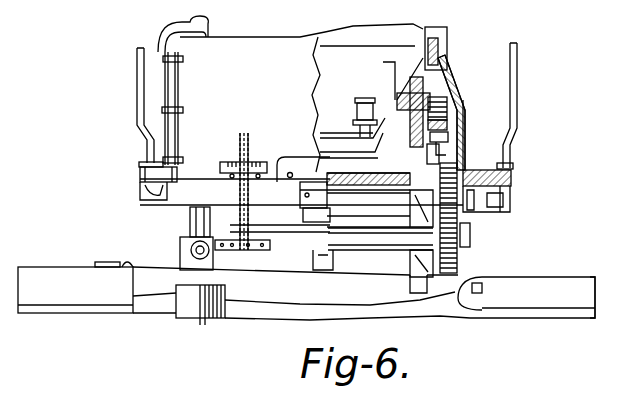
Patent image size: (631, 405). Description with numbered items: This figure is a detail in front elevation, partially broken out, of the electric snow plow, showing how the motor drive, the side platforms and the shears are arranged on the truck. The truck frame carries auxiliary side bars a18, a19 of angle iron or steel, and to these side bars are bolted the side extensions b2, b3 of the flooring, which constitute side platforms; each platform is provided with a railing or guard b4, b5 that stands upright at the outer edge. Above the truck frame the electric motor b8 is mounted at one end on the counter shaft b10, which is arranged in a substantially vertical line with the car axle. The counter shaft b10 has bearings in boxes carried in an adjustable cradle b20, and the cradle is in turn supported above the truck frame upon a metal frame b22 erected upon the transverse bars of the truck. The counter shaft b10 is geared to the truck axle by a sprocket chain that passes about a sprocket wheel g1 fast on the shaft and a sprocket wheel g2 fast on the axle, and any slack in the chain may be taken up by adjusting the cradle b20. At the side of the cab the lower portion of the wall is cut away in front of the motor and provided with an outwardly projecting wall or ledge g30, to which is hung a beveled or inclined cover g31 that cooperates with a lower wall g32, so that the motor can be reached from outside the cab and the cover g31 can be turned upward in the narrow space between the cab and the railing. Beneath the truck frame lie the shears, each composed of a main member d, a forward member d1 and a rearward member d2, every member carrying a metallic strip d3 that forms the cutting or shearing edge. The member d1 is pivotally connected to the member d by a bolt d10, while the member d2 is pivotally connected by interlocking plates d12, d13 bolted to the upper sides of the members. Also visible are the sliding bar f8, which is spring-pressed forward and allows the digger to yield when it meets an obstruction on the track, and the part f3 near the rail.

The shear member d is at (301, 293).
The shear member d1 is at (546, 278).
The shear member d2 is at (75, 290).
The metallic strip d3 is at (522, 309).
The bolt d10 is at (485, 283).
The interlocking plate d12 is at (150, 265).
The interlocking plate d13 is at (268, 318).
The block f3 is at (193, 303).
The sliding bar f8 is at (209, 252).
The sprocket wheel g1 is at (410, 133).
The sprocket wheel g2 is at (410, 284).
The outwardly projecting ledge g30 is at (452, 58).
The inclined cover g31 is at (457, 98).
The lower wall g32 is at (458, 148).
The side extension b2 is at (140, 170).
The side extension b3 is at (511, 176).
The railing b4 is at (135, 80).
The railing b5 is at (517, 82).
The electric motor b8 is at (301, 98).
The counter shaft b10 is at (433, 104).
The cradle b20 is at (430, 128).
The metal frame b22 is at (424, 156).
The auxiliary side bar a18 is at (138, 186).
The auxiliary side bar a19 is at (511, 190).